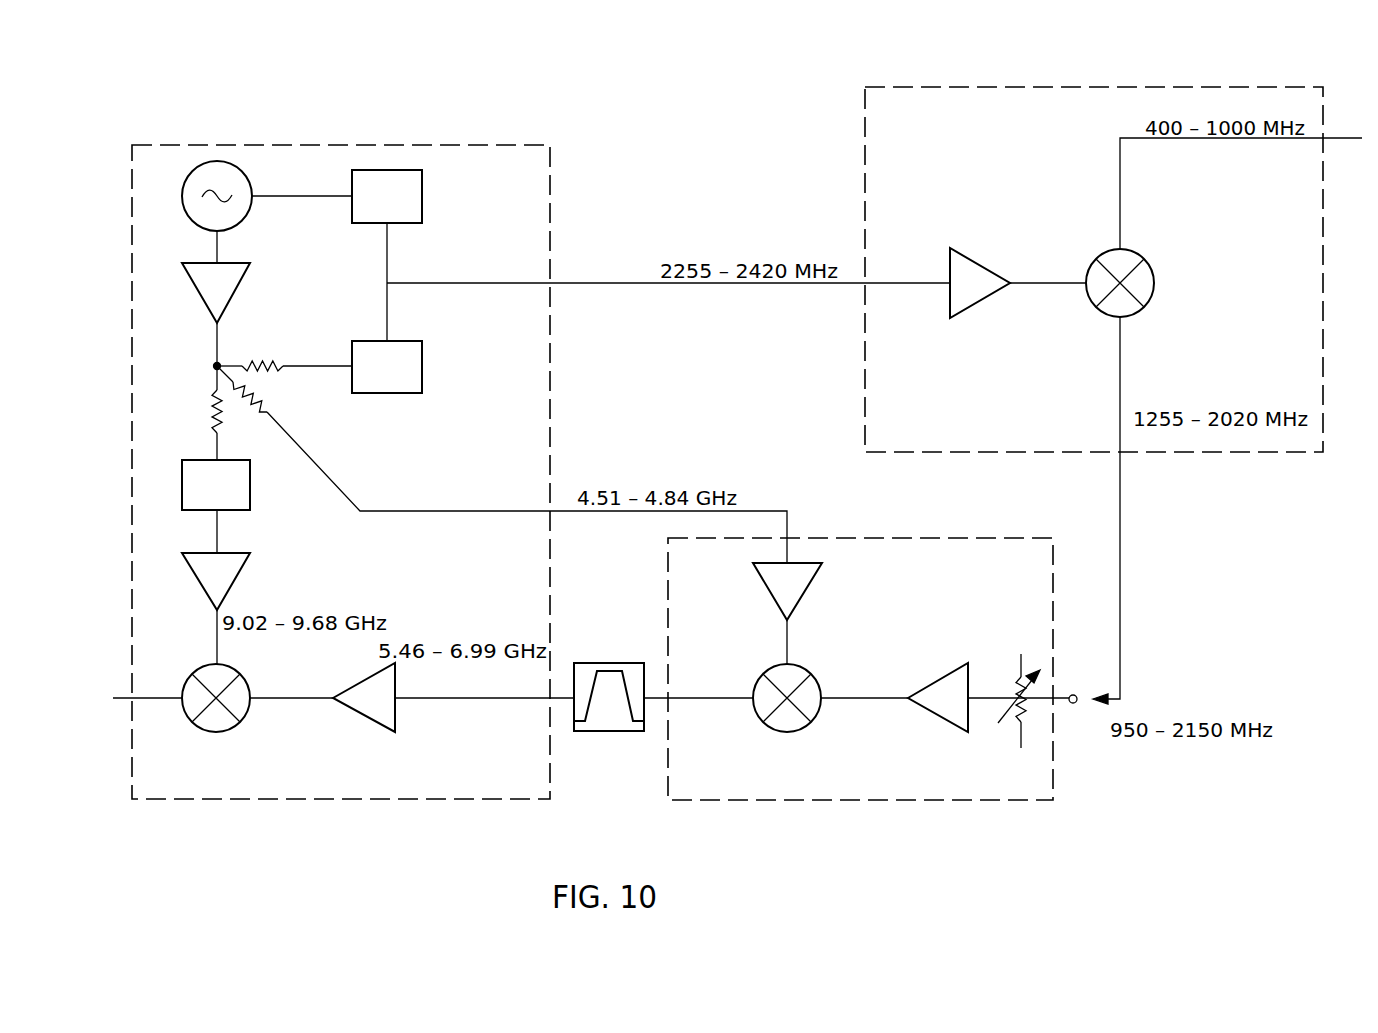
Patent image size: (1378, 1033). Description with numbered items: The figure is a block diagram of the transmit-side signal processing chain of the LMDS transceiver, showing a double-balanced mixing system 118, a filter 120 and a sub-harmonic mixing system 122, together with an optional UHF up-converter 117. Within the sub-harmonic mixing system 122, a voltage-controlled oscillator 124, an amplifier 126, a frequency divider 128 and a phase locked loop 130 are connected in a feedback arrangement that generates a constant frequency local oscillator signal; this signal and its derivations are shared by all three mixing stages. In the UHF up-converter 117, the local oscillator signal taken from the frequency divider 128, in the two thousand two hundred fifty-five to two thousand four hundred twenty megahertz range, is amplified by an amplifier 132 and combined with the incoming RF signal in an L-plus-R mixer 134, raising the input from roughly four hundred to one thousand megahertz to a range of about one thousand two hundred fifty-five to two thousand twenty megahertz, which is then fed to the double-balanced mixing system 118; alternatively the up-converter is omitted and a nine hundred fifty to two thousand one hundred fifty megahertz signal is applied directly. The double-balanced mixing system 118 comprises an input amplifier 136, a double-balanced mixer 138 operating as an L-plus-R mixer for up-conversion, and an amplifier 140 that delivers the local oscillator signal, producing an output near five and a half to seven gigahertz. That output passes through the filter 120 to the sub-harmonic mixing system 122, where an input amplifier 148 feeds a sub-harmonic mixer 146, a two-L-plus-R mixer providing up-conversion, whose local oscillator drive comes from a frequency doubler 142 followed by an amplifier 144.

The UHF up-converter 117 is at (918, 87).
The double-balanced mixing system 118 is at (898, 800).
The filter 120 is at (596, 733).
The sub-harmonic mixing system 122 is at (310, 800).
The voltage-controlled oscillator 124 is at (233, 164).
The amplifier 126 is at (238, 287).
The frequency divider 128 is at (387, 367).
The phase locked loop 130 is at (422, 185).
The amplifier 132 is at (972, 259).
The L+R mixer 134 is at (1134, 250).
The input amplifier 136 is at (930, 718).
The double-balanced mixer 138 is at (775, 735).
The amplifier 140 is at (805, 593).
The frequency doubler 142 is at (250, 498).
The amplifier 144 is at (235, 580).
The sub-harmonic mixer 146 is at (203, 733).
The input amplifier 148 is at (362, 718).